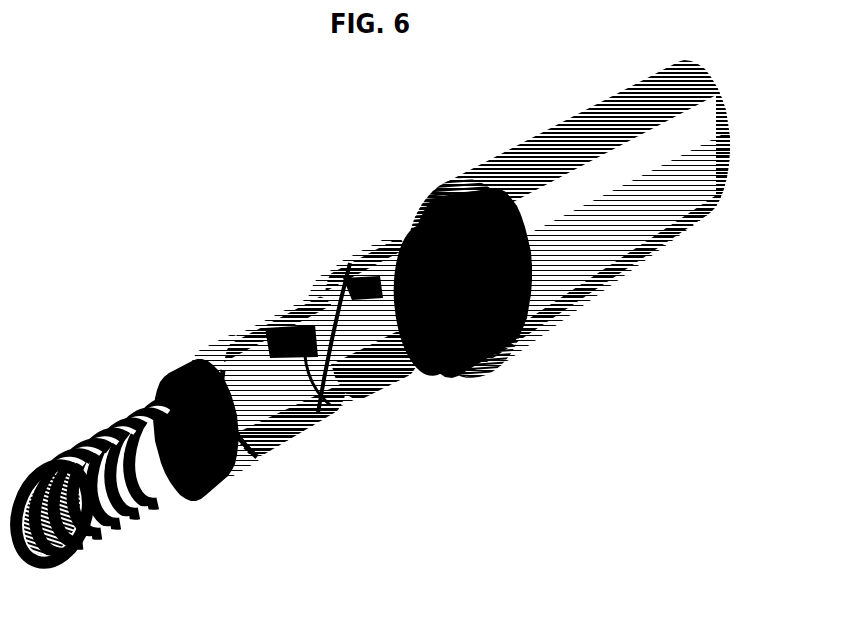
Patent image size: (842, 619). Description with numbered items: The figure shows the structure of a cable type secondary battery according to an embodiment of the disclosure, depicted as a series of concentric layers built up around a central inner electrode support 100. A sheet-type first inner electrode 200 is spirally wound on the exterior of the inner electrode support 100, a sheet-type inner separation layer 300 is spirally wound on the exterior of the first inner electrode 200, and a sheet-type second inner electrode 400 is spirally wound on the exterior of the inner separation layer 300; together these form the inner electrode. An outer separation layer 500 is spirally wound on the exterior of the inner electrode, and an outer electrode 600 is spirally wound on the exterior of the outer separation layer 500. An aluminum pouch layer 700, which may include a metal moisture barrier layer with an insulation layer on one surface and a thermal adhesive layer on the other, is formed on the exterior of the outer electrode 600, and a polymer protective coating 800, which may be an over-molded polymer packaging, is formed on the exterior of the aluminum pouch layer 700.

The inner electrode support 100 is at (78, 447).
The first inner electrode 200 is at (170, 382).
The inner separation layer 300 is at (237, 355).
The second inner electrode 400 is at (270, 325).
The outer separation layer 500 is at (327, 307).
The outer electrode 600 is at (347, 265).
The aluminum pouch layer 700 is at (394, 222).
The polymer protective coating 800 is at (487, 172).